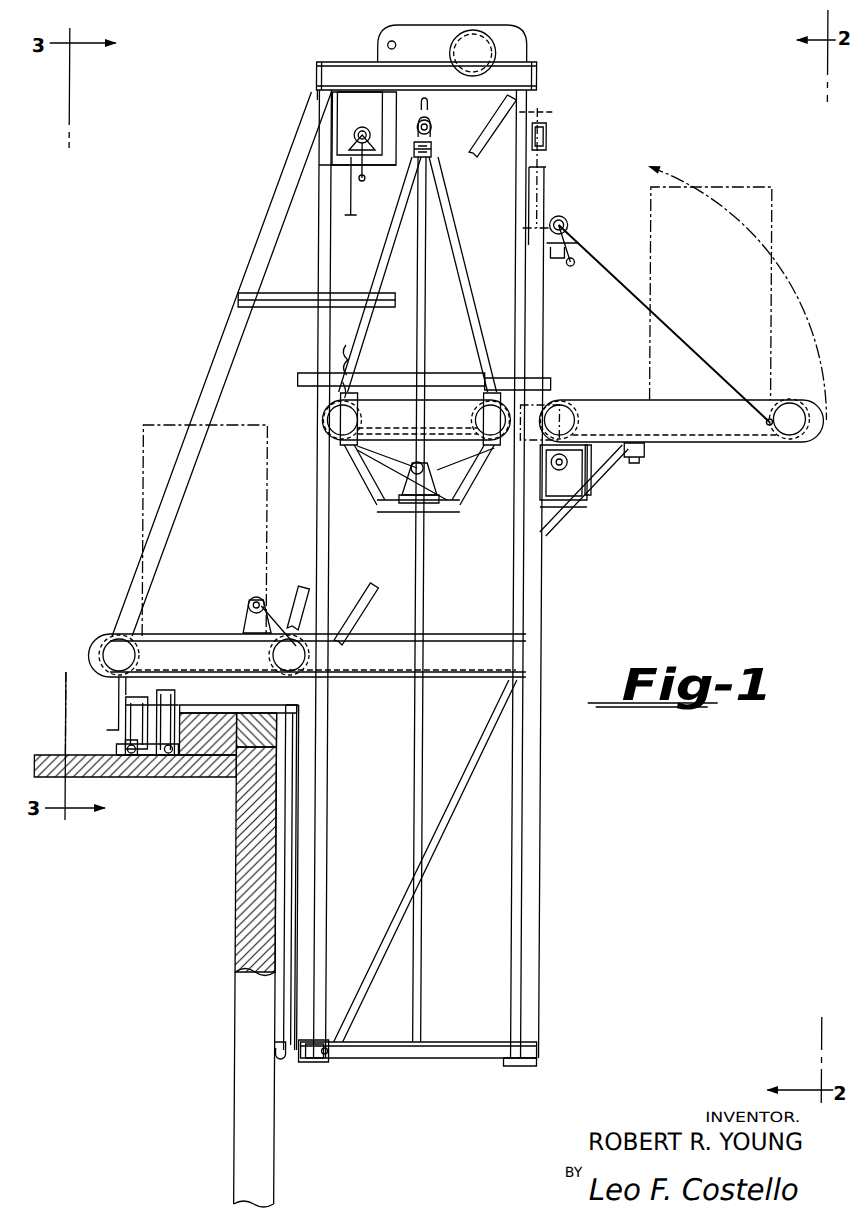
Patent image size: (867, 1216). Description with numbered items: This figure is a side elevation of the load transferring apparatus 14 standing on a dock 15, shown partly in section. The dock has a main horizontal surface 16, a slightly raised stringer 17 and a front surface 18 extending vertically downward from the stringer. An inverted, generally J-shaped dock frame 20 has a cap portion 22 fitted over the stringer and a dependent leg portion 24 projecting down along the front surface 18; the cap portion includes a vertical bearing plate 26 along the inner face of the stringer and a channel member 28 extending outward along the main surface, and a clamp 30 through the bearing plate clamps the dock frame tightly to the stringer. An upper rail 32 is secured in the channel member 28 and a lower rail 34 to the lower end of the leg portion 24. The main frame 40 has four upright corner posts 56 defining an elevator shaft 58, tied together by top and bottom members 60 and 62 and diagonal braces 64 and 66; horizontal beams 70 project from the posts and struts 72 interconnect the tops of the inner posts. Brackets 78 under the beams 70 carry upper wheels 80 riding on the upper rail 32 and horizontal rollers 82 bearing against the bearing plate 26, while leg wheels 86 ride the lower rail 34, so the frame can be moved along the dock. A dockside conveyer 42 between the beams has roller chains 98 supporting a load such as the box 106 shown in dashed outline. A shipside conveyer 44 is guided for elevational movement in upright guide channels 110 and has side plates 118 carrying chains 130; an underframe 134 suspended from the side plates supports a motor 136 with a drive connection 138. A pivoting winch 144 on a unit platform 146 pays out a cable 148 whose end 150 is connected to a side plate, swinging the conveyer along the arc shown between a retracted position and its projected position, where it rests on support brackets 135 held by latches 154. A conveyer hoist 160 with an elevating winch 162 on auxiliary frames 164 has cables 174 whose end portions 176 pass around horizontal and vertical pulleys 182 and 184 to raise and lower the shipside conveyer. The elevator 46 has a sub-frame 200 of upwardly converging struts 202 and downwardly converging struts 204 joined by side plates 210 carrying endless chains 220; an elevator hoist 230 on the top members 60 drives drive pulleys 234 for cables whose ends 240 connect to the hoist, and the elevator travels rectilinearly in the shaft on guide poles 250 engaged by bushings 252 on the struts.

The load transferring apparatus 14 is at (632, 98).
The dock 15 is at (118, 788).
The main horizontal surface 16 is at (72, 724).
The stringer 17 is at (242, 746).
The front surface 18 is at (281, 1097).
The dock frame 20 is at (302, 724).
The cap portion 22 is at (222, 706).
The leg portion 24 is at (299, 864).
The vertical bearing plate 26 is at (173, 758).
The channel member 28 is at (119, 749).
The clamp 30 is at (148, 758).
The upper rail 32 is at (125, 758).
The lower rail 34 is at (281, 1052).
The main frame 40 is at (318, 88).
The dockside conveyer 42 is at (202, 634).
The shipside conveyer 44 is at (733, 456).
The elevator 46 is at (453, 453).
The corner posts 56 is at (321, 222).
The elevator shaft 58 is at (483, 582).
The top longitudinal and transverse members 60 is at (360, 75).
The bottom longitudinal and transverse members 62 is at (374, 1058).
The diagonal braces 64 is at (518, 110).
The diagonal braces 66 is at (456, 814).
The horizontal beams 70 is at (467, 680).
The struts 72 is at (256, 273).
The brackets 78 is at (140, 692).
The upper wheels 80 is at (153, 700).
The horizontal rollers 82 is at (180, 722).
The leg wheels 86 is at (325, 1063).
The roller chains 98 is at (170, 632).
The box 106 is at (735, 187).
The guide channels 110 is at (535, 822).
The side plates 118 is at (692, 425).
The chains 130 is at (597, 398).
The underframe 134 is at (575, 508).
The support brackets 135 is at (585, 502).
The motor 136 is at (568, 512).
The drive connection 138 is at (572, 463).
The pivoting winch 144 is at (578, 222).
The unit platform 146 is at (575, 266).
The cable 148 is at (670, 318).
The cable end 150 is at (770, 440).
The latches 154 is at (642, 458).
The conveyer hoist 160 is at (366, 118).
The elevating winch 162 is at (352, 135).
The auxiliary frames 164 is at (338, 152).
The cables 174 is at (455, 118).
The end portions 176 is at (548, 192).
The horizontal pulleys 182 is at (556, 112).
The vertical pulleys 184 is at (548, 138).
The sub-frame 200 is at (362, 486).
The upwardly converging struts 202 is at (390, 262).
The downwardly converging struts 204 is at (462, 506).
The side plates 210 is at (447, 398).
The endless chains 220 is at (389, 392).
The elevator hoist 230 is at (532, 34).
The drive pulley 234 is at (485, 52).
The cable ends 240 is at (402, 58).
The guide poles 250 is at (415, 786).
The bushings 252 is at (434, 150).